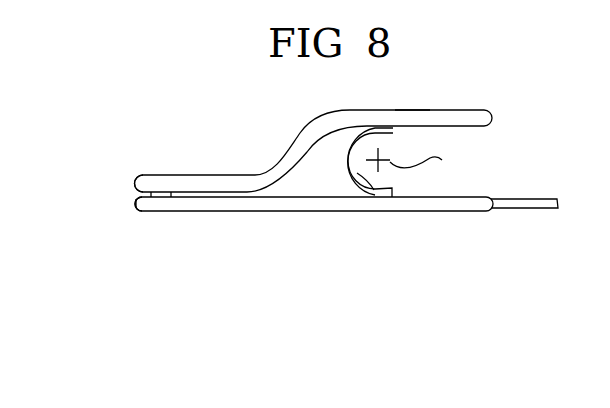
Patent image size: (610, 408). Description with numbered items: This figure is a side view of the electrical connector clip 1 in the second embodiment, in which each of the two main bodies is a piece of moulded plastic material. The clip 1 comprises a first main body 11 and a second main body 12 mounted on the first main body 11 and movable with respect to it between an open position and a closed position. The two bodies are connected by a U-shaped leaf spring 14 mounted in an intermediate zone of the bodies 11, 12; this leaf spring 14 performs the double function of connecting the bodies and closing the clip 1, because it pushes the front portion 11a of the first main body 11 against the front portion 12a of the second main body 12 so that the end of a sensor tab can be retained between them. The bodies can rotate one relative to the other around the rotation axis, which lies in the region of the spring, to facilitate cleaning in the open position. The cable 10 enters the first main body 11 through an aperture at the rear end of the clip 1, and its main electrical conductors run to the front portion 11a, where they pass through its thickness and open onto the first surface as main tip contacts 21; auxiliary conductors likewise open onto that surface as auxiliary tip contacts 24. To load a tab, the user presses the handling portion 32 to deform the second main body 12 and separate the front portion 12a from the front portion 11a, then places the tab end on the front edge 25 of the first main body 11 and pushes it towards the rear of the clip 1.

The electrical connector clip 1 is at (308, 147).
The cable 10 is at (518, 195).
The first main body 11 is at (288, 237).
The front portion of the first main body 11a is at (143, 205).
The second main body 12 is at (317, 104).
The front portion of the second main body 12a is at (140, 185).
The leaf spring 14 is at (373, 186).
The main tip contacts 21 is at (151, 193).
The auxiliary tip contacts 24 is at (171, 192).
The front edge 25 is at (135, 203).
The handling portion 32 is at (410, 109).